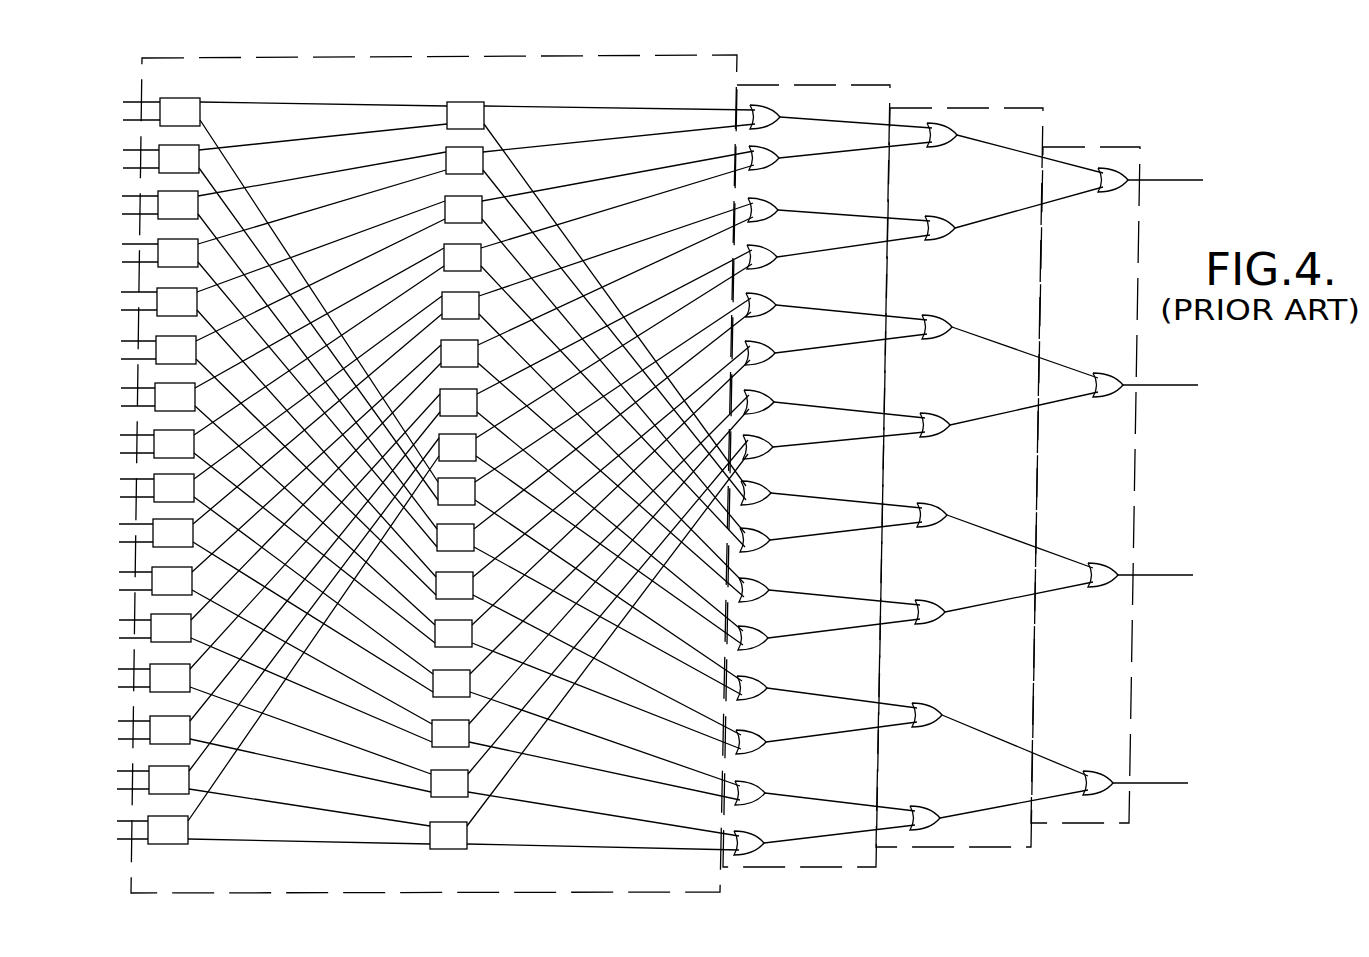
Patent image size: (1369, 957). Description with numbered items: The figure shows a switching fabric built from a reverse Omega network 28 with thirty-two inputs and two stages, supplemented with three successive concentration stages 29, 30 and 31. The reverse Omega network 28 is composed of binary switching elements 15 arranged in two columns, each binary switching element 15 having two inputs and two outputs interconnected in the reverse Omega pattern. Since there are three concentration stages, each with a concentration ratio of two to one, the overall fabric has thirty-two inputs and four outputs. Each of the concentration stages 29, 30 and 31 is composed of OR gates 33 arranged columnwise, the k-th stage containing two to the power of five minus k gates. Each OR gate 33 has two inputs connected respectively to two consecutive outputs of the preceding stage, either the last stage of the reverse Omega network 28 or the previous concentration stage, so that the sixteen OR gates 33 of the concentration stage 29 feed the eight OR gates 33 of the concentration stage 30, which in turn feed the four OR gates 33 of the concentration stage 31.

The binary switching element 15 is at (174, 110).
The reverse Omega network 28 is at (343, 53).
The concentration stage 29 is at (851, 83).
The concentration stage 30 is at (947, 105).
The concentration stage 31 is at (1088, 145).
The OR gate 33 is at (767, 112).